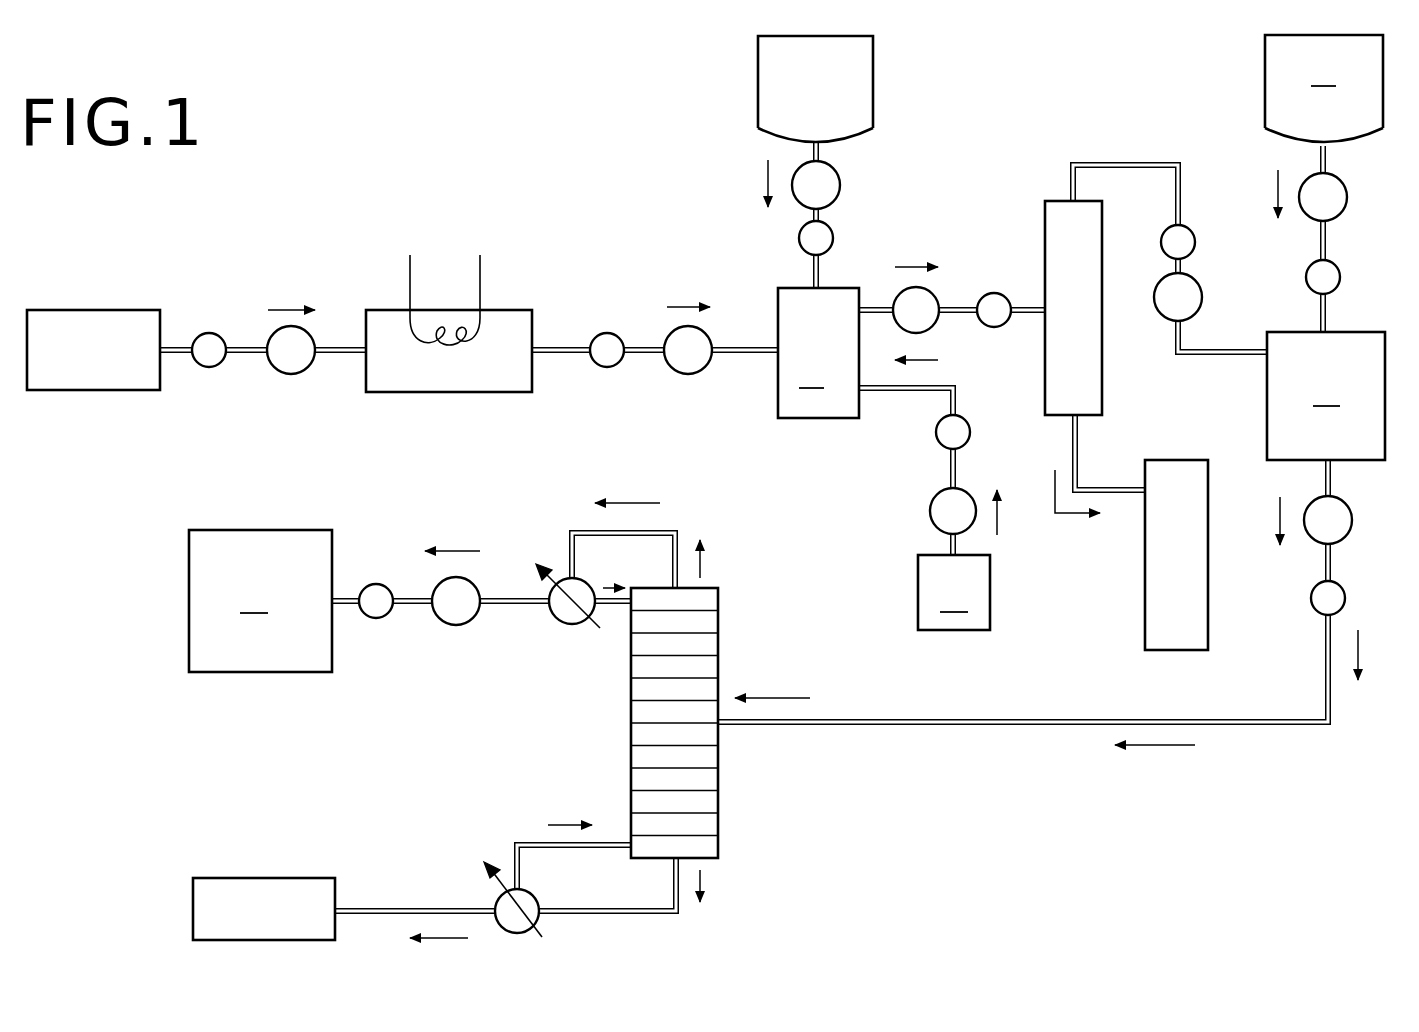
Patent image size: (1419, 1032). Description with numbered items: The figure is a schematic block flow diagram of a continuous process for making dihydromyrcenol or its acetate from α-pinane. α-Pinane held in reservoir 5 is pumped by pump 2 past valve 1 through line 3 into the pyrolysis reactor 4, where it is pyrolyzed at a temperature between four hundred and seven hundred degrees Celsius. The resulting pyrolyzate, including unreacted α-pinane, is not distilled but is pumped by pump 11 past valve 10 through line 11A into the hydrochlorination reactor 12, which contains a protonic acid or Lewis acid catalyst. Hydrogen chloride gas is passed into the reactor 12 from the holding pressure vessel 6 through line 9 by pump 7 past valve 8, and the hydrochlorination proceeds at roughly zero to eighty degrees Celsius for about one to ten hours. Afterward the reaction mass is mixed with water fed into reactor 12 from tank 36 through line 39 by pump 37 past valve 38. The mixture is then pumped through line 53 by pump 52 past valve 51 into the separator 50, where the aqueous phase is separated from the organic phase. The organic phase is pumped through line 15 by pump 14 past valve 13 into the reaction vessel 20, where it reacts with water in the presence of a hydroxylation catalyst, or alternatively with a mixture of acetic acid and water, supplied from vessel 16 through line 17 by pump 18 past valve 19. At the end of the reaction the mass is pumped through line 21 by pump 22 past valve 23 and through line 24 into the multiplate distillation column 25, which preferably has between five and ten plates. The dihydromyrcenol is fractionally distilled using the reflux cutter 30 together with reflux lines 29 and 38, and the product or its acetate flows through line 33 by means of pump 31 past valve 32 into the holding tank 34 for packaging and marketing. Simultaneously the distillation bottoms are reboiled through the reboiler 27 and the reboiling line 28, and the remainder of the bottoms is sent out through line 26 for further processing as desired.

The valve 1 is at (209, 333).
The pump 2 is at (291, 374).
The line 3 is at (346, 356).
The pyrolysis reactor 4 is at (398, 380).
The reservoir 5 is at (80, 390).
The holding pressure vessel 6 is at (873, 92).
The pump 7 is at (830, 191).
The valve 8 is at (804, 240).
The line 9 is at (820, 153).
The valve 10 is at (607, 333).
The pump 11 is at (683, 374).
The line 11A is at (750, 356).
The hydrochlorination reactor 12 is at (818, 353).
The valve 13 is at (1194, 245).
The pump 14 is at (1196, 302).
The line 15 is at (1206, 356).
The vessel 16 is at (1324, 88).
The line 17 is at (1320, 157).
The pump 18 is at (1335, 190).
The valve 19 is at (1338, 277).
The reaction vessel 20 is at (1326, 396).
The line 21 is at (1331, 482).
The pump 22 is at (1345, 525).
The valve 23 is at (1312, 598).
The line 24 is at (1016, 726).
The distillation column 25 is at (631, 732).
The line 26 is at (426, 908).
The reboiler 27 is at (536, 928).
The reboiling line 28 is at (530, 840).
The reflux line 29 is at (673, 558).
The reflux cutter 30 is at (572, 624).
The pump 31 is at (456, 625).
The valve 32 is at (376, 584).
The line 33 is at (513, 606).
The holding tank 34 is at (260, 601).
The tank 36 is at (954, 592).
The pump 37 is at (938, 514).
The valve 38 is at (967, 437).
The line 39 is at (896, 393).
The separator 50 is at (1058, 240).
The valve 51 is at (990, 296).
The pump 52 is at (900, 296).
The line 53 is at (1030, 306).